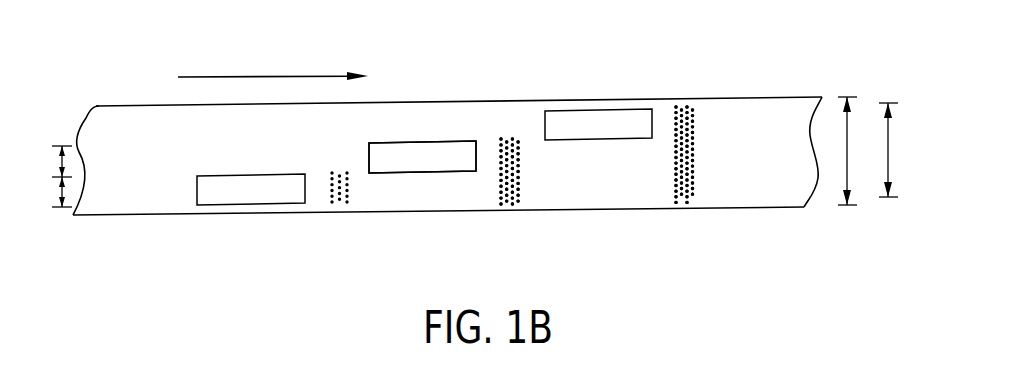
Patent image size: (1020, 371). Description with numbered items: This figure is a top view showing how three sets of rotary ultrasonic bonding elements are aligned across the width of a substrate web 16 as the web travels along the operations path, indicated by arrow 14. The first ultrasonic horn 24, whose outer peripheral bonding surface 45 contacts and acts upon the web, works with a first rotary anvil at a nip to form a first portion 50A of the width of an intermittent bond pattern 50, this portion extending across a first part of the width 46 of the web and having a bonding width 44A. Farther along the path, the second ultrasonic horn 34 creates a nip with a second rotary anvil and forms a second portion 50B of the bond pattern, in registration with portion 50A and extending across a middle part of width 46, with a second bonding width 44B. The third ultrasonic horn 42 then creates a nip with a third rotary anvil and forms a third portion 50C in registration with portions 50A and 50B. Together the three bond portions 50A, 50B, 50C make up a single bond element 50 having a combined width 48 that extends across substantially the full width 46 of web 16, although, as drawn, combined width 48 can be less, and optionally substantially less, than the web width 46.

The direction of motion arrow 14 is at (247, 76).
The substrate web 16 is at (127, 145).
The first ultrasonic horn 24 is at (272, 205).
The second ultrasonic horn 34 is at (433, 173).
The third ultrasonic horn 42 is at (608, 97).
The bonding width 44A is at (55, 193).
The second bonding width 44B is at (56, 158).
The outer peripheral bonding surface 45 is at (452, 157).
The width of the web 46 is at (848, 150).
The combined width 48 is at (890, 153).
The intermittent bond pattern 50 is at (706, 186).
The first portion of bond pattern 50A is at (337, 204).
The second portion of bond pattern 50B is at (520, 152).
The third portion of bond pattern 50C is at (692, 128).